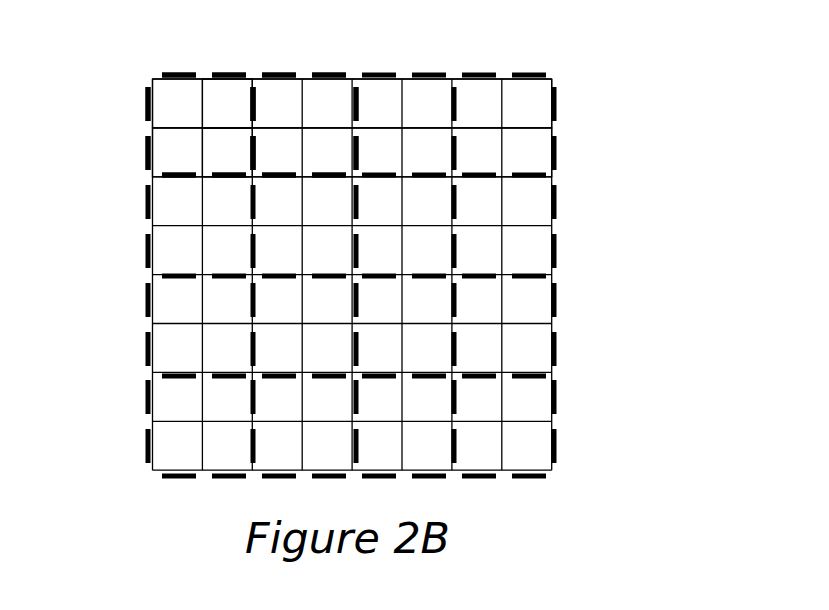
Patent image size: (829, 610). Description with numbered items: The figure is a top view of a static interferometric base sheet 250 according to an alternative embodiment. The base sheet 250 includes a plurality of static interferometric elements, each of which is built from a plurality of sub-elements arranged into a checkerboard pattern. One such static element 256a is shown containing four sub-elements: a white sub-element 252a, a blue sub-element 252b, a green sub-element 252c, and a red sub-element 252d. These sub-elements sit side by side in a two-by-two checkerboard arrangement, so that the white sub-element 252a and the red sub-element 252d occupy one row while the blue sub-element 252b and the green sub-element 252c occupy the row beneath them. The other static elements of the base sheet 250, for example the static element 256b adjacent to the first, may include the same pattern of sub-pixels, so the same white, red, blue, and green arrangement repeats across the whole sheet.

The static interferometric base sheet 250 is at (694, 69).
The white sub-element 252a is at (152, 114).
The blue sub-element 252b is at (165, 160).
The green sub-element 252c is at (227, 158).
The red sub-element 252d is at (243, 84).
The static interferometric element 256a is at (168, 73).
The static interferometric element 256b is at (272, 75).